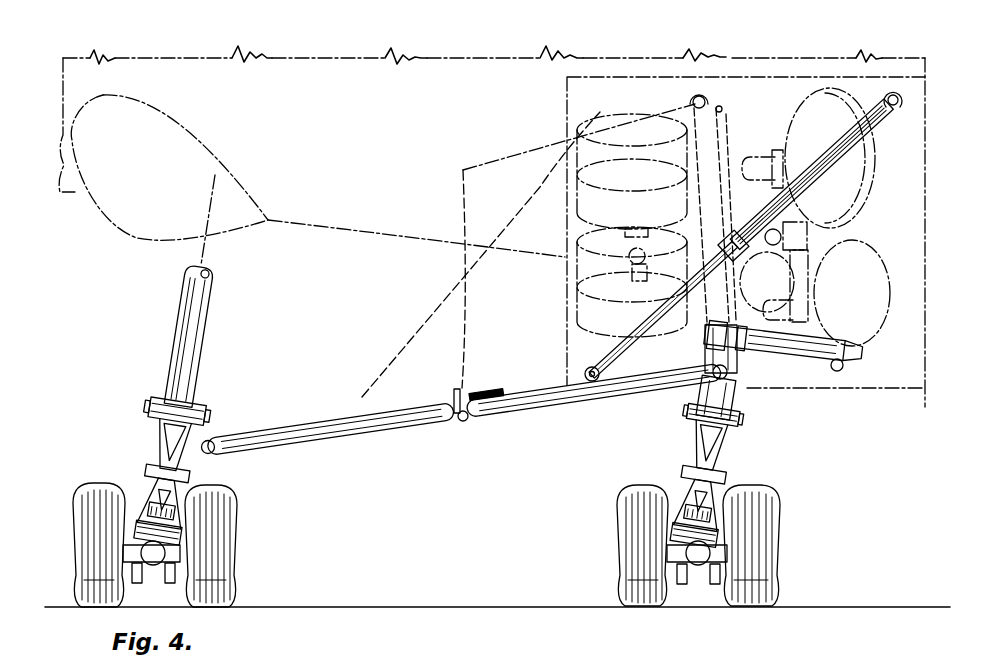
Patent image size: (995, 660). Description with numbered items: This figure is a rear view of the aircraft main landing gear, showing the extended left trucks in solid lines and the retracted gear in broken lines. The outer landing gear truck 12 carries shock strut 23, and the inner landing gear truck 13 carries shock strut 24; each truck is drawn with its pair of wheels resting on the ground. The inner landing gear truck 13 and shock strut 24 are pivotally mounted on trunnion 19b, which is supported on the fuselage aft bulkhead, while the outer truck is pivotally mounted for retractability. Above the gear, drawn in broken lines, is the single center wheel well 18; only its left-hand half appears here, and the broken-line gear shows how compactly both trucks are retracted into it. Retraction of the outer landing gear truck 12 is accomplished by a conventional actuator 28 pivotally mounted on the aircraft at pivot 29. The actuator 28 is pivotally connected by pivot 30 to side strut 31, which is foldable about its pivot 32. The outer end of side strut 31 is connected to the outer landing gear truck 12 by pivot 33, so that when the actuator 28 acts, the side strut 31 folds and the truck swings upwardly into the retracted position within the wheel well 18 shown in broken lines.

The outer landing gear truck 12 is at (122, 472).
The inner landing gear truck 13 is at (744, 471).
The wheel well 18 is at (590, 78).
The trunnion 19b is at (826, 366).
The shock strut 23 is at (173, 310).
The shock strut 24 is at (738, 396).
The actuator 28 is at (850, 163).
The pivot 29 is at (900, 104).
The pivot 30 is at (586, 371).
The side strut 31 is at (500, 417).
The pivot 32 is at (464, 422).
The pivot 33 is at (214, 450).